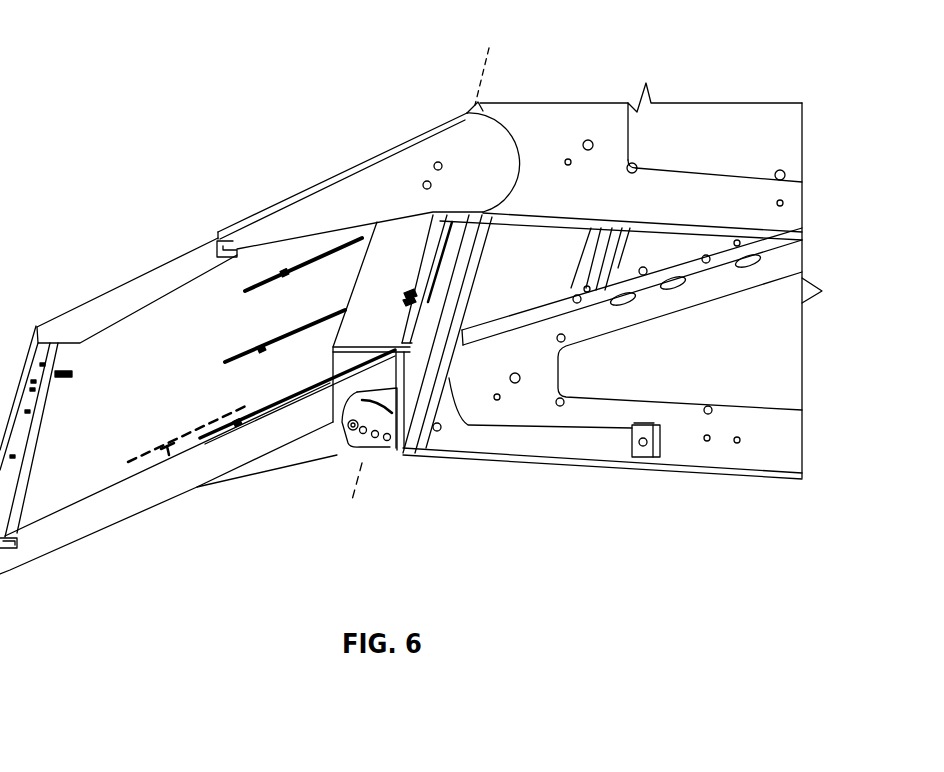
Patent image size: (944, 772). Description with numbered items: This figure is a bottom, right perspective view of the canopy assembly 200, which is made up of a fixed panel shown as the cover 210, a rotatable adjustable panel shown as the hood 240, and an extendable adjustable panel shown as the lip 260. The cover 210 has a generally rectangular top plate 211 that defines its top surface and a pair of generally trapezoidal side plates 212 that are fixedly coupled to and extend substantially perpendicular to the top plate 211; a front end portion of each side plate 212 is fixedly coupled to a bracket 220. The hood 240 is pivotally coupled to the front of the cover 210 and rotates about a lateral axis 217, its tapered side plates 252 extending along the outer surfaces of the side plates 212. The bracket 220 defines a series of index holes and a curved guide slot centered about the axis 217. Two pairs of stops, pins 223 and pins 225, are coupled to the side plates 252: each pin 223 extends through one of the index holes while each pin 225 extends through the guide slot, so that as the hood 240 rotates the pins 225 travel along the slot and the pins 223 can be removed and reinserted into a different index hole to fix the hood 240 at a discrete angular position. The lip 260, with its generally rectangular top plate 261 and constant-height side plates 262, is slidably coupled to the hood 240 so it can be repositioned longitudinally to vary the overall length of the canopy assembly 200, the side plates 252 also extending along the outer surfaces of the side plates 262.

The canopy assembly 200 is at (272, 301).
The cover 210 is at (633, 317).
The top plate 211 is at (544, 276).
The side plates 212 is at (775, 223).
The axis 217 is at (413, 477).
The bracket 220 is at (418, 281).
The pins 223 is at (433, 163).
The pins 225 is at (427, 178).
The hood 240 is at (313, 187).
The side plates 252 is at (372, 175).
The lip 260 is at (226, 389).
The top plate 261 is at (179, 383).
The side plates 262 is at (173, 277).